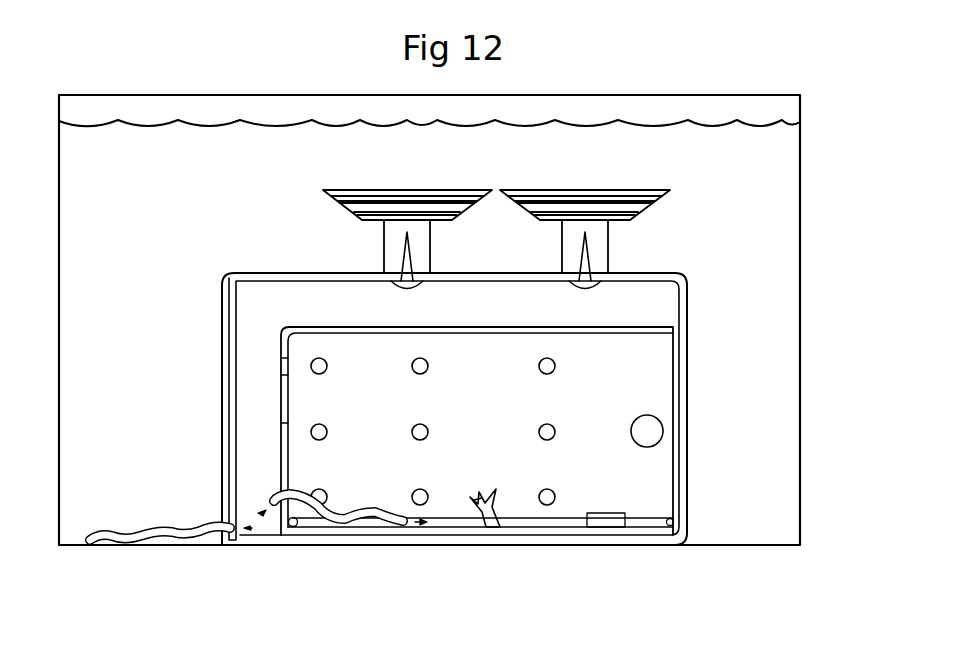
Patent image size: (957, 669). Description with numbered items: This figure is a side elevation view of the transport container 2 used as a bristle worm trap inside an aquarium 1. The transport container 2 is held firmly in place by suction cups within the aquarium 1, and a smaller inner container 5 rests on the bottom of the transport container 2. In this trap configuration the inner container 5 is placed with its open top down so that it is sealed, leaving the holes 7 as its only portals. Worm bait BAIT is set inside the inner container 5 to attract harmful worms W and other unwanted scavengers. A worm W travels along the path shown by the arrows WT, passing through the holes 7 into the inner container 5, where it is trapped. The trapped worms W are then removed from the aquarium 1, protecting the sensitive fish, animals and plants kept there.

The aquarium 1 is at (785, 178).
The transport container 2 is at (260, 273).
The inner container 5 is at (635, 327).
The holes 7 is at (557, 366).
The harmful worms W is at (176, 547).
The worm travel arrows WT is at (246, 532).
The worm bait BAIT is at (500, 520).